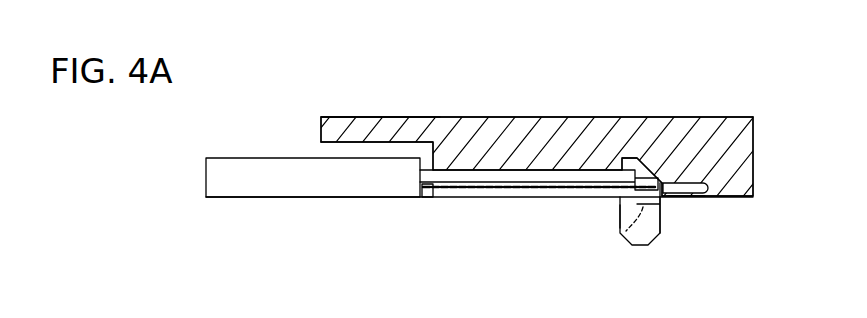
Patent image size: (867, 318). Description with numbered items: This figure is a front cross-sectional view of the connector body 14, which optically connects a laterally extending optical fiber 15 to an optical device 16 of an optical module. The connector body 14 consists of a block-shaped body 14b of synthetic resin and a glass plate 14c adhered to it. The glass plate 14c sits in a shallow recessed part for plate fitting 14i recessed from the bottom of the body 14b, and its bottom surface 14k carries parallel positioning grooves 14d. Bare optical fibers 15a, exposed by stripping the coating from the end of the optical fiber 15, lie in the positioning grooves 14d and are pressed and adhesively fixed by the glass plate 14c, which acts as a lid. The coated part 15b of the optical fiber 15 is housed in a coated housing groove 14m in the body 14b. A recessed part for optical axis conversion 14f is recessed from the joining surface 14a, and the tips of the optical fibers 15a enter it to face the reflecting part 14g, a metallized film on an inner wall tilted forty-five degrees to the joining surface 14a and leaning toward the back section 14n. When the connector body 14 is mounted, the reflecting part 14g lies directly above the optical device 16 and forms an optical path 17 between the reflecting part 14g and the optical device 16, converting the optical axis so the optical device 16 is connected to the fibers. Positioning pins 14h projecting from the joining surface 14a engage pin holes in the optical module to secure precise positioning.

The connector body 14 is at (731, 116).
The joining surface 14a is at (727, 198).
The body 14b is at (612, 116).
The glass plate 14c is at (490, 198).
The positioning grooves 14d is at (512, 186).
The recessed part for optical axis conversion 14f is at (645, 157).
The reflecting part 14g is at (665, 192).
The positioning pins 14h is at (630, 215).
The recessed part for plate fitting 14i is at (688, 198).
The bottom surface of recessed part for plate fitting 14k is at (706, 188).
The coated housing groove 14m is at (332, 151).
The back section 14n is at (390, 116).
The optical fiber 15 is at (249, 198).
The optical fibers 15a is at (462, 170).
The coated part 15b is at (428, 198).
The optical device 16 is at (624, 234).
The optical path 17 is at (660, 198).